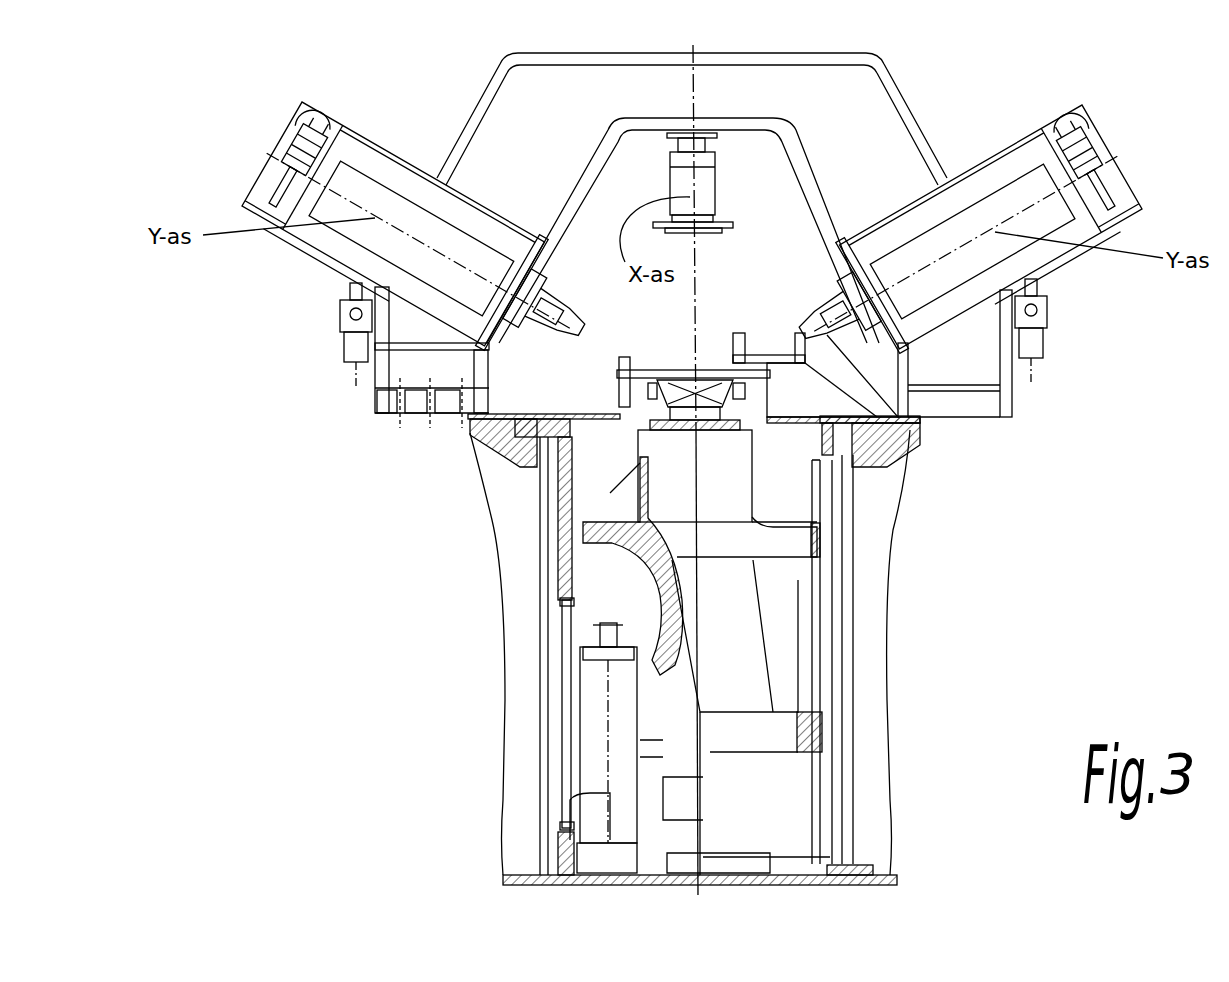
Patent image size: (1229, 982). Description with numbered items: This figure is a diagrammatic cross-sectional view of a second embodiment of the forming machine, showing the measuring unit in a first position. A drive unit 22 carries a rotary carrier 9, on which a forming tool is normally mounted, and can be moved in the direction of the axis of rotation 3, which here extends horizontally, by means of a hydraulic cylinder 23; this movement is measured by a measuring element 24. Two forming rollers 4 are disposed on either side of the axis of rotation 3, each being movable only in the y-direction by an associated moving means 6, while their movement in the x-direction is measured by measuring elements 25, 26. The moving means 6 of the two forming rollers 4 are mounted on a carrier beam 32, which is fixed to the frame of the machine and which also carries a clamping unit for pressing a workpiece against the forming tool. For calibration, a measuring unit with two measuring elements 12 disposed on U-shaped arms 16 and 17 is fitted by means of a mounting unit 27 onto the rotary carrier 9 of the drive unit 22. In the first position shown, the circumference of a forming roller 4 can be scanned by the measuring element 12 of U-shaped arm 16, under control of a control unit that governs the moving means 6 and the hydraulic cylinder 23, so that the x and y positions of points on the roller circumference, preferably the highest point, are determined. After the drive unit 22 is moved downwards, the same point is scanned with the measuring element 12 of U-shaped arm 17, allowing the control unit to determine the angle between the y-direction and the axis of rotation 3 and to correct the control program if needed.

The axis of rotation 3 is at (700, 770).
The forming roller 4 is at (556, 318).
The moving means 6 is at (298, 150).
The rotary carrier 9 is at (640, 405).
The measuring element 12 is at (804, 338).
The U-shaped arm 16 is at (803, 363).
The U-shaped arm 17 is at (737, 340).
The drive unit 22 is at (742, 632).
The hydraulic cylinder 23 is at (600, 707).
The measuring element 24 is at (572, 640).
The measuring element 25 is at (950, 197).
The measuring element 26 is at (398, 282).
The mounting unit 27 is at (650, 345).
The carrier beam 32 is at (905, 165).